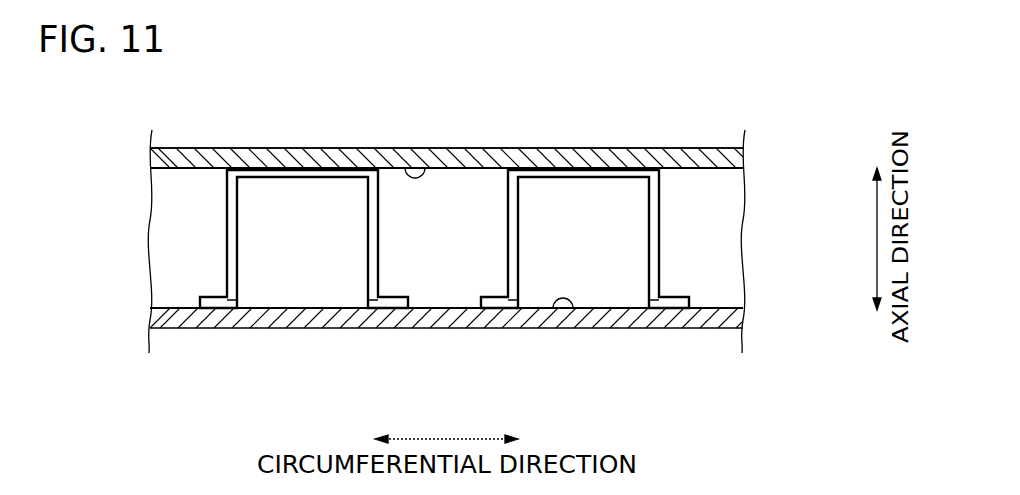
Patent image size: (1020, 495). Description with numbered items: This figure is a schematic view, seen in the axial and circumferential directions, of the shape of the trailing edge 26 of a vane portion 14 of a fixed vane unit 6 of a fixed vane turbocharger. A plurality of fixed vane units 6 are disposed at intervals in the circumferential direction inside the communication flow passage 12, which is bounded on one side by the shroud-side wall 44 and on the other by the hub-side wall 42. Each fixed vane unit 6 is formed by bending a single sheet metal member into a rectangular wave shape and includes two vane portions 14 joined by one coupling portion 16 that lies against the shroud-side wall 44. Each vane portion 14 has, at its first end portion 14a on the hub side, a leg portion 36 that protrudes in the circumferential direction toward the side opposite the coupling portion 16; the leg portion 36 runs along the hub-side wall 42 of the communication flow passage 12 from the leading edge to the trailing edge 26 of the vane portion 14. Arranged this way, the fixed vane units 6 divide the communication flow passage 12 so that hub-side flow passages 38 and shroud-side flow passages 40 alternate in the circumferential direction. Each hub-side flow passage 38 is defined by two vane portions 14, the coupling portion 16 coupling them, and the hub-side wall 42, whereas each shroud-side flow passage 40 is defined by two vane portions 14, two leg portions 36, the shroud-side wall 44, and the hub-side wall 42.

The fixed vane unit 6 is at (203, 217).
The communication flow passage 12 is at (737, 268).
The vane portion 14 is at (227, 245).
The first end portion 14a is at (235, 310).
The coupling portion 16 is at (300, 160).
The trailing edge 26 is at (368, 220).
The leg portion 36 is at (215, 309).
The hub-side flow passage 38 is at (300, 283).
The shroud-side flow passage 40 is at (472, 198).
The hub-side wall 42 is at (568, 306).
The shroud-side wall 44 is at (421, 168).